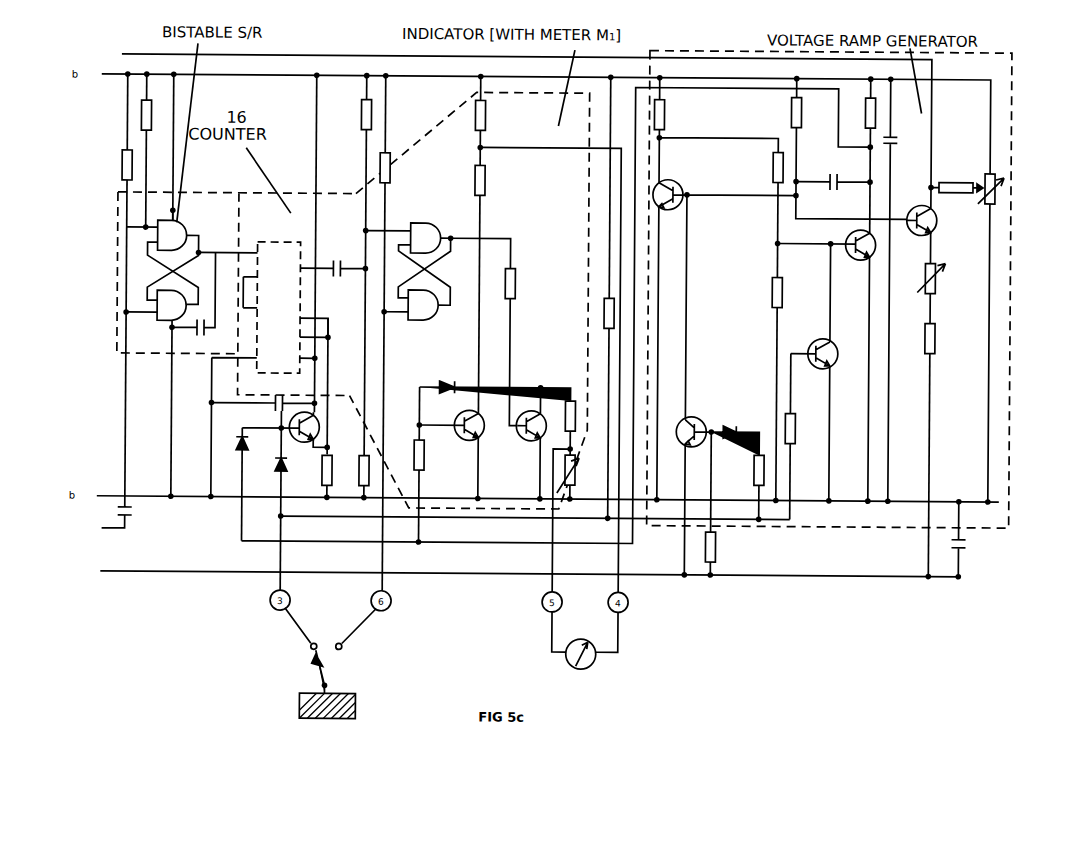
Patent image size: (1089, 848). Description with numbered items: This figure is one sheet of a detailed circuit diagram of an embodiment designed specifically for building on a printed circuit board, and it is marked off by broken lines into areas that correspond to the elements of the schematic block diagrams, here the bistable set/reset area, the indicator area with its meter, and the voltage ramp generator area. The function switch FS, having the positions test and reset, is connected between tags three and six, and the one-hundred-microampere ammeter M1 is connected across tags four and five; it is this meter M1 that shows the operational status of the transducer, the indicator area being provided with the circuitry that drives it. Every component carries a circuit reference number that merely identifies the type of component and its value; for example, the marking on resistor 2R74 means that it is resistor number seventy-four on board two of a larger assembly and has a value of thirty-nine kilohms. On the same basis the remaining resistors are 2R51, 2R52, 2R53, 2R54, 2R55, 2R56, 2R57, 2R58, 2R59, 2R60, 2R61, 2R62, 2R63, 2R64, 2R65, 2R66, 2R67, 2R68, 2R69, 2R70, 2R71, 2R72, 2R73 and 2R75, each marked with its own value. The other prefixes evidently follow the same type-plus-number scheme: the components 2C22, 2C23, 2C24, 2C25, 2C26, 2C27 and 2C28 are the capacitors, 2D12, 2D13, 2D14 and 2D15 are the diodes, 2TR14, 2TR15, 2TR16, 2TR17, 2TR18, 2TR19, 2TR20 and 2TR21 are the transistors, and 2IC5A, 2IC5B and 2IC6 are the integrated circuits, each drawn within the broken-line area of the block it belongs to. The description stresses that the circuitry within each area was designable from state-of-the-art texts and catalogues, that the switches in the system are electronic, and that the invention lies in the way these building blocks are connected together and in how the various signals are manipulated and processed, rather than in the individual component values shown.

The NAND gate bistable (half SN74L00N) 2IC5A is at (198, 255).
The NAND gate indicator latch (half SN74L00N) 2IC5B is at (408, 255).
The counter SN74L93N 2IC6 is at (288, 289).
The resistor 1K 2R51 is at (115, 165).
The resistor 1K 2R52 is at (158, 108).
The resistor 1K 2R53 is at (311, 476).
The resistor 1K 2R54 is at (352, 109).
The resistor 1K 2R55 is at (350, 455).
The resistor 1K 2R56 is at (398, 168).
The resistor 470K 2R57 is at (434, 464).
The resistor 47K 2R58 is at (495, 120).
The resistor 15K 2R59 is at (493, 288).
The resistor 470K 2R60 is at (496, 332).
The resistor 1.5K 2R61 is at (576, 496).
The variable resistor 47K 2R62 is at (580, 477).
The resistor 1K 2R63 is at (594, 313).
The resistor 10K 2R64 is at (716, 131).
The resistor 1K 2R65 is at (724, 503).
The resistor 4.7K 2R66 is at (746, 487).
The resistor 47K 2R67 is at (764, 214).
The resistor 47K 2R68 is at (762, 388).
The resistor 220K 2R69 is at (833, 148).
The resistor 10K 2R70 is at (803, 437).
The resistor 10K 2R71 is at (857, 156).
The resistor 10K 2R72 is at (955, 192).
The variable resistor 10K 2R73 is at (940, 293).
The resistor 2R74 is at (942, 450).
The variable resistor 1K 2R75 is at (998, 338).
The capacitor 680p 2C22 is at (130, 512).
The capacitor .01 2C23 is at (195, 298).
The capacitor .01 2C24 is at (263, 404).
The capacitor 680p 2C25 is at (345, 266).
The electrolytic capacitor 15uF 12V 2C26 is at (834, 185).
The capacitor 1 2C27 is at (902, 290).
The capacitor 1 2C28 is at (971, 539).
The diode IN914 2D12 is at (229, 442).
The diode IN914 2D13 is at (267, 470).
The diode IN914 2D14 is at (495, 378).
The zener diode IN5232B 2D15 is at (735, 429).
The transistor ZTX302 2TR14 is at (283, 426).
The transistor ZTX331 2TR15 is at (450, 446).
The transistor ZTX331 2TR16 is at (527, 443).
The transistor ZTX302 2TR17 is at (725, 330).
The transistor ZTX302 2TR18 is at (697, 385).
The transistor ZTX302 2TR19 is at (827, 373).
The transistor ZTX302 2TR20 is at (826, 366).
The transistor ZTX302 2TR21 is at (937, 225).
The function switch FS is at (343, 671).
The meter 100uA M1 is at (585, 650).